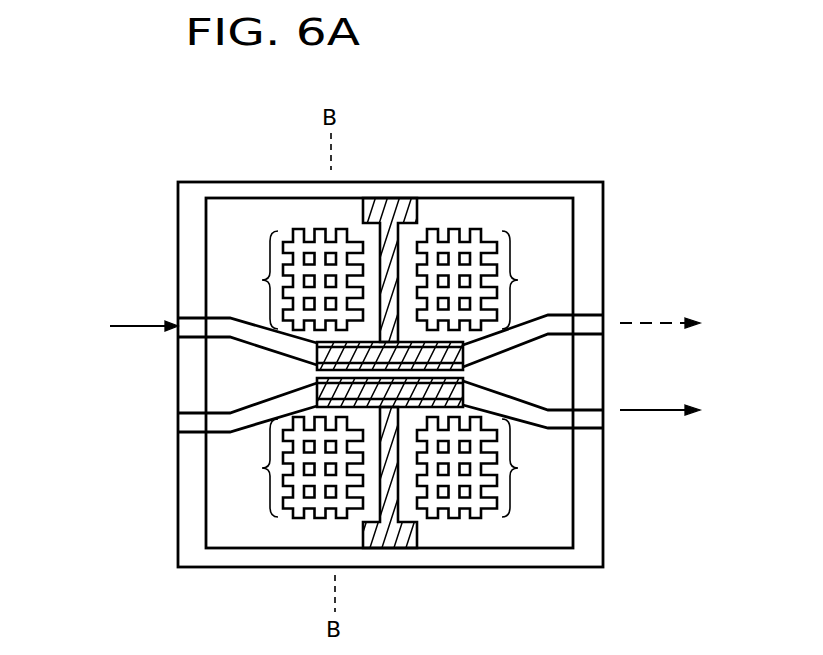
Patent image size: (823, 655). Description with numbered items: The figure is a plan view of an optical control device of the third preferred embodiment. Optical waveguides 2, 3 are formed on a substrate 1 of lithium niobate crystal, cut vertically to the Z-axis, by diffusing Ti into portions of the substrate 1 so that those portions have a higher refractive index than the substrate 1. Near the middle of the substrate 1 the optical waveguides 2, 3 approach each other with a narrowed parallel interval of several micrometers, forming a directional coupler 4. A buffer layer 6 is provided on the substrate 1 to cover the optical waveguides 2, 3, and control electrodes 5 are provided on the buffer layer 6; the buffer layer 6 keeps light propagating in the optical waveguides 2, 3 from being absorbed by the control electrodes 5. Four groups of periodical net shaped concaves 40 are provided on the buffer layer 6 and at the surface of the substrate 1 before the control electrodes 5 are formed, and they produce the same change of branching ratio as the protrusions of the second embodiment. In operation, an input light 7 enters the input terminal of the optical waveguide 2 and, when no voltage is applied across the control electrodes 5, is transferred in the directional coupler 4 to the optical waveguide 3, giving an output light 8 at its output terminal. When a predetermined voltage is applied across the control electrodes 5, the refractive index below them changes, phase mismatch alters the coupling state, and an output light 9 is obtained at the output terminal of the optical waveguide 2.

The substrate 1 is at (590, 190).
The optical waveguide 2 is at (232, 323).
The optical waveguide 3 is at (235, 424).
The directional coupler 4 is at (417, 340).
The control electrode 5 is at (384, 210).
The buffer layer 6 is at (533, 528).
The periodical net shaped concave 40 is at (641, 522).
The input light 7 is at (138, 330).
The output light 8 is at (661, 412).
The output light 9 is at (661, 326).